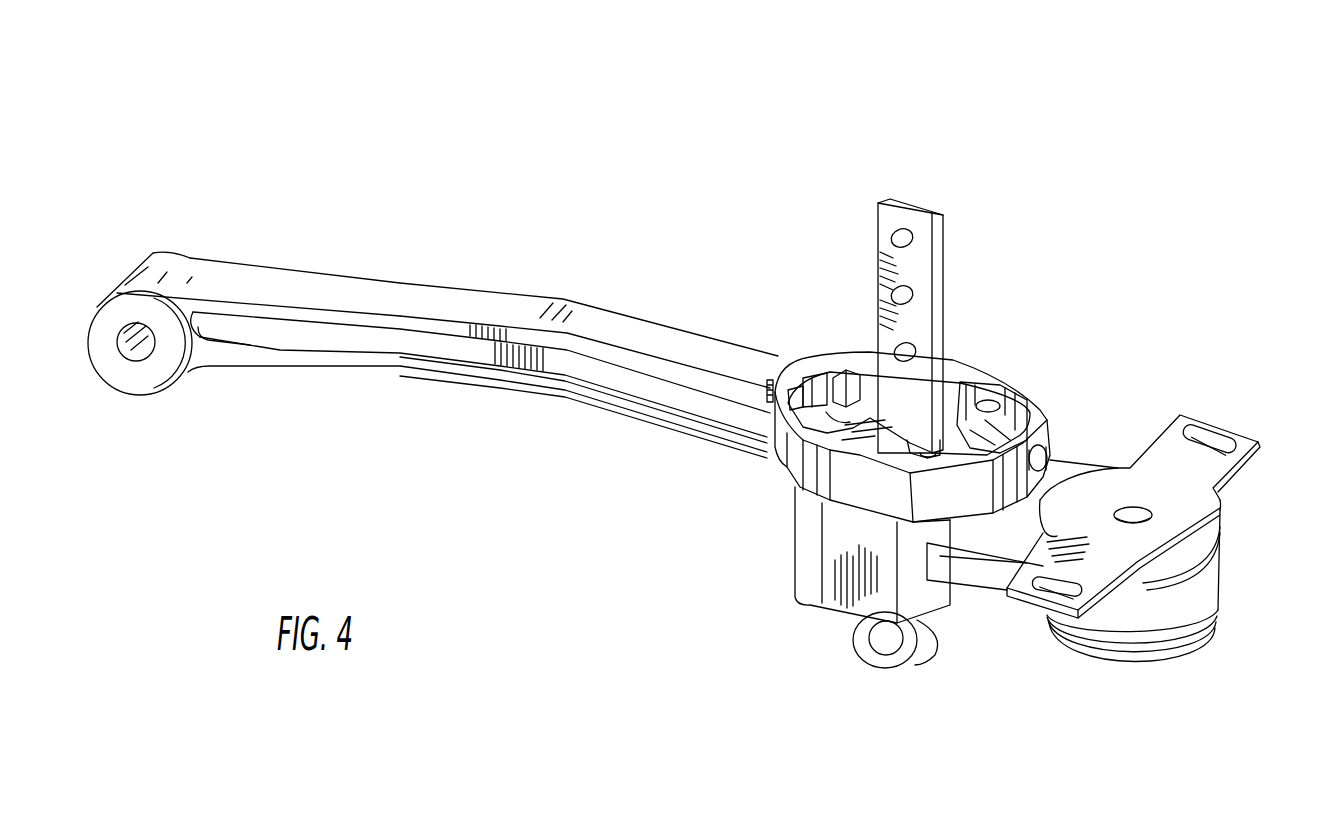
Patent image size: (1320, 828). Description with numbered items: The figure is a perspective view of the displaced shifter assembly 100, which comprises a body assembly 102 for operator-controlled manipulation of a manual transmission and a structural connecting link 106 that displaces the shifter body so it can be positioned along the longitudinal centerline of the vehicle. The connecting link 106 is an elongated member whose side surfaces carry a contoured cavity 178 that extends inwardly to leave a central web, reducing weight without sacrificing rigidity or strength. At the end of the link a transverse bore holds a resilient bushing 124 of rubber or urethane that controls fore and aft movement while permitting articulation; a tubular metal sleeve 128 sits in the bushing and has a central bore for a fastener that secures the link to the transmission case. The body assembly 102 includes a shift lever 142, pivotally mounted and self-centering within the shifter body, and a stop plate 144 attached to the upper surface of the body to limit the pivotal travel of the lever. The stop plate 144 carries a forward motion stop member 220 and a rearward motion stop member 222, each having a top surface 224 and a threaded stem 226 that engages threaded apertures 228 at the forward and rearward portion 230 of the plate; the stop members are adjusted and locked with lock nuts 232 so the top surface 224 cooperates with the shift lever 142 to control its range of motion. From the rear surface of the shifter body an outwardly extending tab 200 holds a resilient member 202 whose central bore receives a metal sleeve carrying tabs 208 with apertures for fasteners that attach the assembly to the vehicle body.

The shifter assembly 100 is at (354, 152).
The body assembly 102 is at (790, 548).
The connecting link 106 is at (378, 293).
The resilient bushing 124 is at (173, 372).
The tubular metal sleeve 128 is at (130, 362).
The shift lever 142 is at (940, 390).
The stop plate 144 is at (1017, 387).
The contoured cavity 178 is at (607, 368).
The outwardly extending tab 200 is at (1208, 583).
The resilient member 202 is at (1197, 620).
The tabs 208 is at (1235, 428).
The forward motion stop member 220 is at (832, 376).
The rearward motion stop member 222 is at (967, 410).
The top surface 224 is at (848, 392).
The threaded stem 226 is at (1047, 443).
The threaded apertures 228 is at (765, 398).
The rearward portion 230 is at (1013, 487).
The lock nuts 232 is at (782, 402).